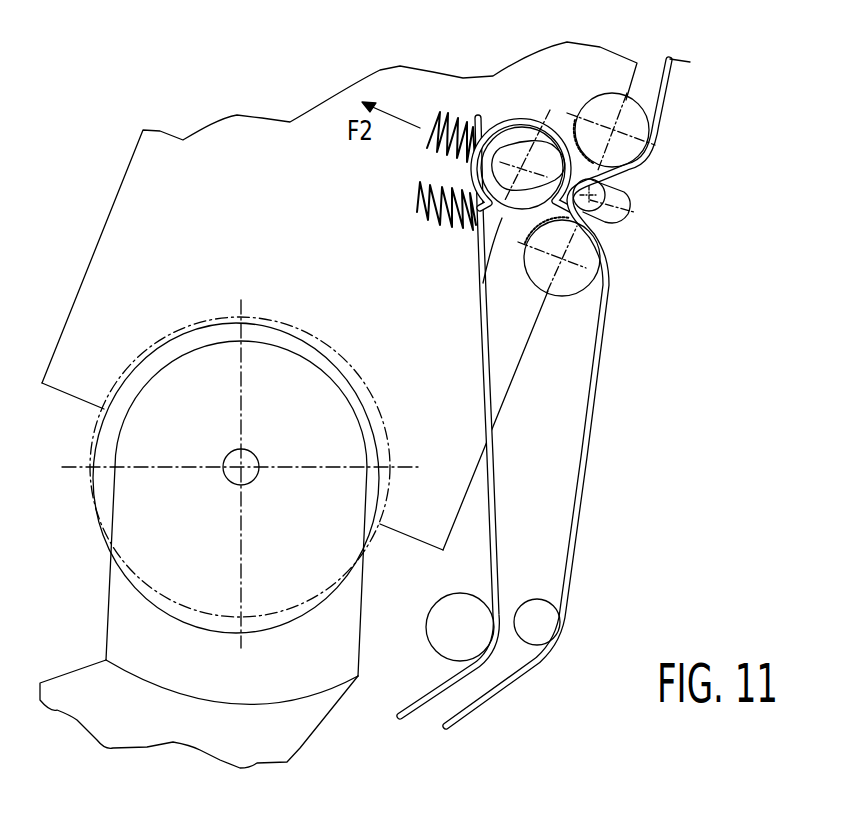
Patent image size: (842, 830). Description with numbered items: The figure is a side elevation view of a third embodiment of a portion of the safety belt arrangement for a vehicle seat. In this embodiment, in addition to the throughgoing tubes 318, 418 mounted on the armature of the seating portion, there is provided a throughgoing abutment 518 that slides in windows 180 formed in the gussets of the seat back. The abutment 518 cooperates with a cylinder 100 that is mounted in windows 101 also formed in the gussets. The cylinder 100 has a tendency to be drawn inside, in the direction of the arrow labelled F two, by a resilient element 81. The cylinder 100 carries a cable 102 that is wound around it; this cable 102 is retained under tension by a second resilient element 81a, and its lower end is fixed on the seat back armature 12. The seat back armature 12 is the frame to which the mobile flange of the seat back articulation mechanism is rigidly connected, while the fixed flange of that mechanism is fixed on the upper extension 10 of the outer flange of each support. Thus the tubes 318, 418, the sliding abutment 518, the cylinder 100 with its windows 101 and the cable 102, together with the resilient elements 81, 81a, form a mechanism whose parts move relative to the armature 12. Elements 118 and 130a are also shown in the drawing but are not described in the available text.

The upper extension 10 is at (187, 393).
The armature 12 is at (153, 212).
The resilient element 81 is at (449, 111).
The second resilient element 81a is at (419, 220).
The cylinder 100 is at (513, 133).
The windows 101 is at (550, 110).
The cable 102 is at (481, 289).
The roller 118 is at (542, 618).
The sheet guide plate 130a is at (672, 92).
The windows 180 is at (623, 222).
The throughgoing tube 318 is at (573, 278).
The throughgoing tube 418 is at (612, 108).
The throughgoing abutment 518 is at (627, 197).